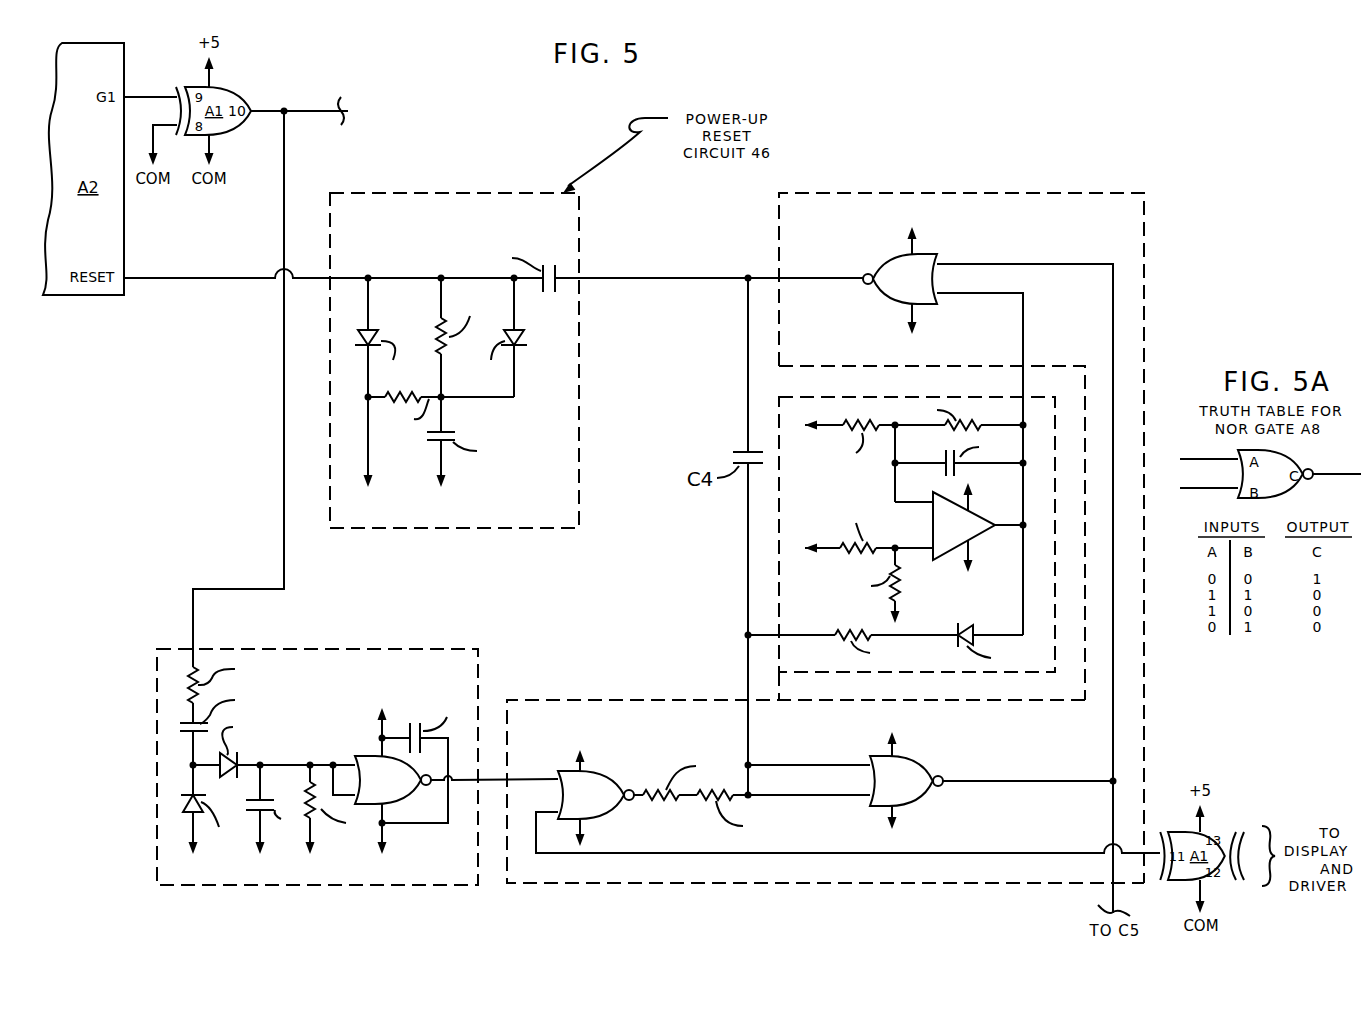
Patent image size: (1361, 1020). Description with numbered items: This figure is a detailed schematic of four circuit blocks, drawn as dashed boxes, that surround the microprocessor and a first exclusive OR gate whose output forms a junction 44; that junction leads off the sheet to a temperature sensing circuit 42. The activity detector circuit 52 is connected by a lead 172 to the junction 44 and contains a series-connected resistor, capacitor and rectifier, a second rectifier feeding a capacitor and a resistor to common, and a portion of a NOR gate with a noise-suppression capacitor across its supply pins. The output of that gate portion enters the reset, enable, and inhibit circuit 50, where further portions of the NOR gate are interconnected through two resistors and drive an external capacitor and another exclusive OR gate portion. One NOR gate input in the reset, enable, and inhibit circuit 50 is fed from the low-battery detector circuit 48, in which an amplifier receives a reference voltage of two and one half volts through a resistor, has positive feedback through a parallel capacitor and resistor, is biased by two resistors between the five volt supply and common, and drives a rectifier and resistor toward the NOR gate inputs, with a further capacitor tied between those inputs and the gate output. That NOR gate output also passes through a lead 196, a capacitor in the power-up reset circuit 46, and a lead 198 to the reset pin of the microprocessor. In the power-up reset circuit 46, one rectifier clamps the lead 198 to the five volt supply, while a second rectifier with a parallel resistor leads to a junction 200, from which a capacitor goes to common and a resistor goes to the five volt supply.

The temperature sensing circuit 42 is at (429, 110).
The junction 44 is at (285, 108).
The power-up reset circuit 46 is at (454, 360).
The low-battery detector circuit 48 is at (770, 521).
The reset, enable, and inhibit circuit 50 is at (590, 891).
The activity detector circuit 52 is at (148, 752).
The lead 172 is at (284, 208).
The lead 196 is at (679, 276).
The lead 198 is at (255, 276).
The junction 200 is at (445, 400).